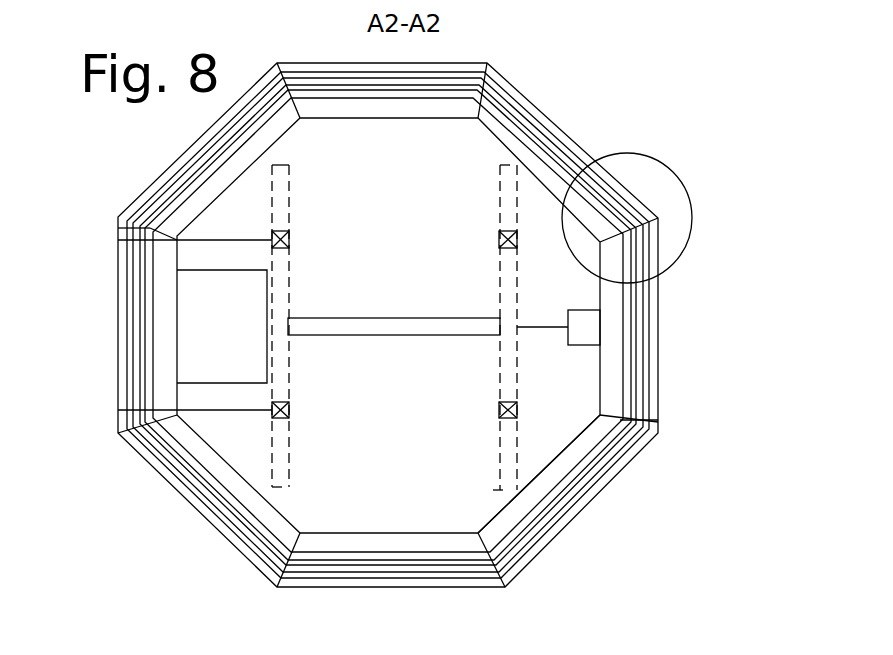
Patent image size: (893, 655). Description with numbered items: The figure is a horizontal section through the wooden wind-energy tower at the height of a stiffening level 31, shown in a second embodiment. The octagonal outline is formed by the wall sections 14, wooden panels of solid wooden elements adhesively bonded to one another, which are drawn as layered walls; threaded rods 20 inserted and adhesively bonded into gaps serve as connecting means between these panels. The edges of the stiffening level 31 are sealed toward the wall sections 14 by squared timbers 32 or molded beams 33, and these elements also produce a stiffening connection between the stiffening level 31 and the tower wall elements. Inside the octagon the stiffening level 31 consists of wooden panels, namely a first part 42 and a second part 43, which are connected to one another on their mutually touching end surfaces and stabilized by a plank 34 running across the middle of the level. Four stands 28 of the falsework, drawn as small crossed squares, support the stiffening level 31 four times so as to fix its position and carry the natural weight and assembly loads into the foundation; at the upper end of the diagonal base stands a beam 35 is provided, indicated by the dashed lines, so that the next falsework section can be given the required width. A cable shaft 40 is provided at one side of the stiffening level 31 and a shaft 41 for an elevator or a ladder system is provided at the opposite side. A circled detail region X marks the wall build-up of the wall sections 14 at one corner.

The wall section 14 is at (590, 500).
The threaded rod 20 is at (627, 455).
The stands 28 is at (289, 240).
The stiffening level 31 is at (416, 168).
The squared timbers 32 is at (388, 325).
The molded beams 33 is at (510, 515).
The plank 34 is at (340, 335).
The beam 35 is at (283, 165).
The cable shaft 40 is at (587, 327).
The elevator shaft 41 is at (220, 345).
The first part of the stiffening level 42 is at (413, 293).
The second part of the stiffening level 43 is at (411, 488).
The detail region X is at (661, 229).